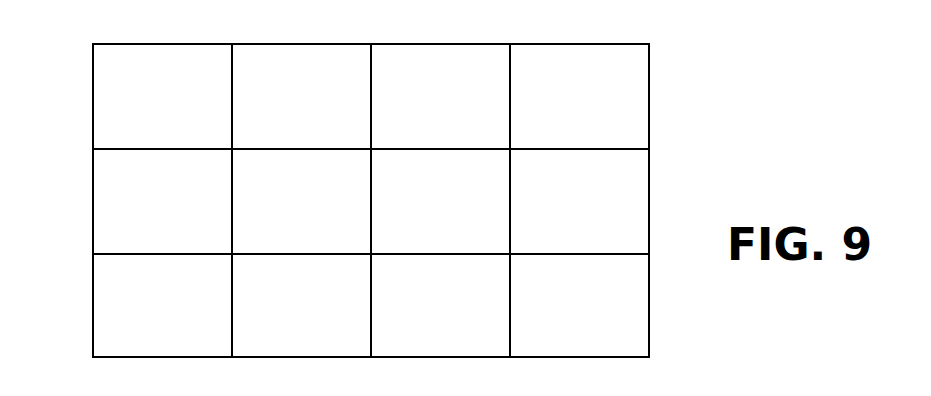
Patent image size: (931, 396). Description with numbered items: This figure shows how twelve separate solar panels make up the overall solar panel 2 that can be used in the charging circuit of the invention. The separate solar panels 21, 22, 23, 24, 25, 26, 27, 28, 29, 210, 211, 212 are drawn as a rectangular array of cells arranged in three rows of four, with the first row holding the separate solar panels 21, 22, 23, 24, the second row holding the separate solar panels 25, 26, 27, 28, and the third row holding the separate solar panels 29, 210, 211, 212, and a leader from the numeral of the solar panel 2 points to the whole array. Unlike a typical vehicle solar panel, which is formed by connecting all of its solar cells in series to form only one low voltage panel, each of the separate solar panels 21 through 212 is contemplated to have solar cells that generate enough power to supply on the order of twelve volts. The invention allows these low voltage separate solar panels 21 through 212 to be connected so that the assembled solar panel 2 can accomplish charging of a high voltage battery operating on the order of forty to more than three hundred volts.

The solar panel 2 is at (76, 187).
The separate solar panel 21 is at (168, 106).
The separate solar panel 22 is at (307, 106).
The separate solar panel 23 is at (446, 106).
The separate solar panel 24 is at (585, 106).
The separate solar panel 25 is at (168, 210).
The separate solar panel 26 is at (307, 210).
The separate solar panel 27 is at (446, 210).
The separate solar panel 28 is at (585, 210).
The separate solar panel 29 is at (168, 308).
The separate solar panel 210 is at (302, 308).
The separate solar panel 211 is at (442, 308).
The separate solar panel 212 is at (580, 308).